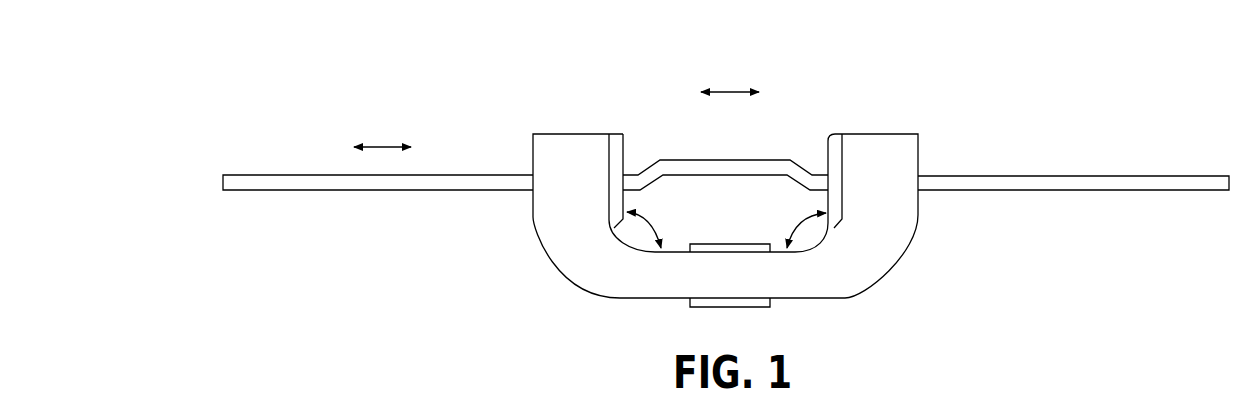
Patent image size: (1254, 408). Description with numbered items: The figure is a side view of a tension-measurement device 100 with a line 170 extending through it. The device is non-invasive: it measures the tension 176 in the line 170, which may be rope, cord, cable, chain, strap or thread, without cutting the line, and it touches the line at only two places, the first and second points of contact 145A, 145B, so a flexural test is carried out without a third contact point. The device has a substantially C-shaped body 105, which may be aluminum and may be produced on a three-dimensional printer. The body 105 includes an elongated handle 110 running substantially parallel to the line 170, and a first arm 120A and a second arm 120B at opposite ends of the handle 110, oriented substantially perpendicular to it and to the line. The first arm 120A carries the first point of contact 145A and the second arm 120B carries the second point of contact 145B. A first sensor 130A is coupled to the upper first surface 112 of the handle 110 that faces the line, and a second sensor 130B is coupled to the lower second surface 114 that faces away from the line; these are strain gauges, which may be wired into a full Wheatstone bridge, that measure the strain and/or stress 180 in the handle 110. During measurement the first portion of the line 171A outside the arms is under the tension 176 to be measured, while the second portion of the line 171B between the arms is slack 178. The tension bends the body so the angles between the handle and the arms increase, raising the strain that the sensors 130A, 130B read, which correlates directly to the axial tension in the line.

The tension-measurement device 100 is at (508, 86).
The body 105 is at (727, 238).
The handle 110 is at (650, 288).
The first surface 112 is at (680, 250).
The second surface 114 is at (670, 302).
The first arm 120A is at (548, 213).
The second arm 120B is at (898, 232).
The first sensor 130A is at (731, 243).
The second sensor 130B is at (745, 312).
The first point of contact 145A is at (521, 159).
The second point of contact 145B is at (927, 167).
The line 170 is at (258, 174).
The first portion of the line 171A is at (293, 174).
The second portion of the line 171B is at (697, 159).
The tension 176 is at (383, 145).
The slack 178 is at (730, 90).
The strain and/or stress 180 is at (861, 300).